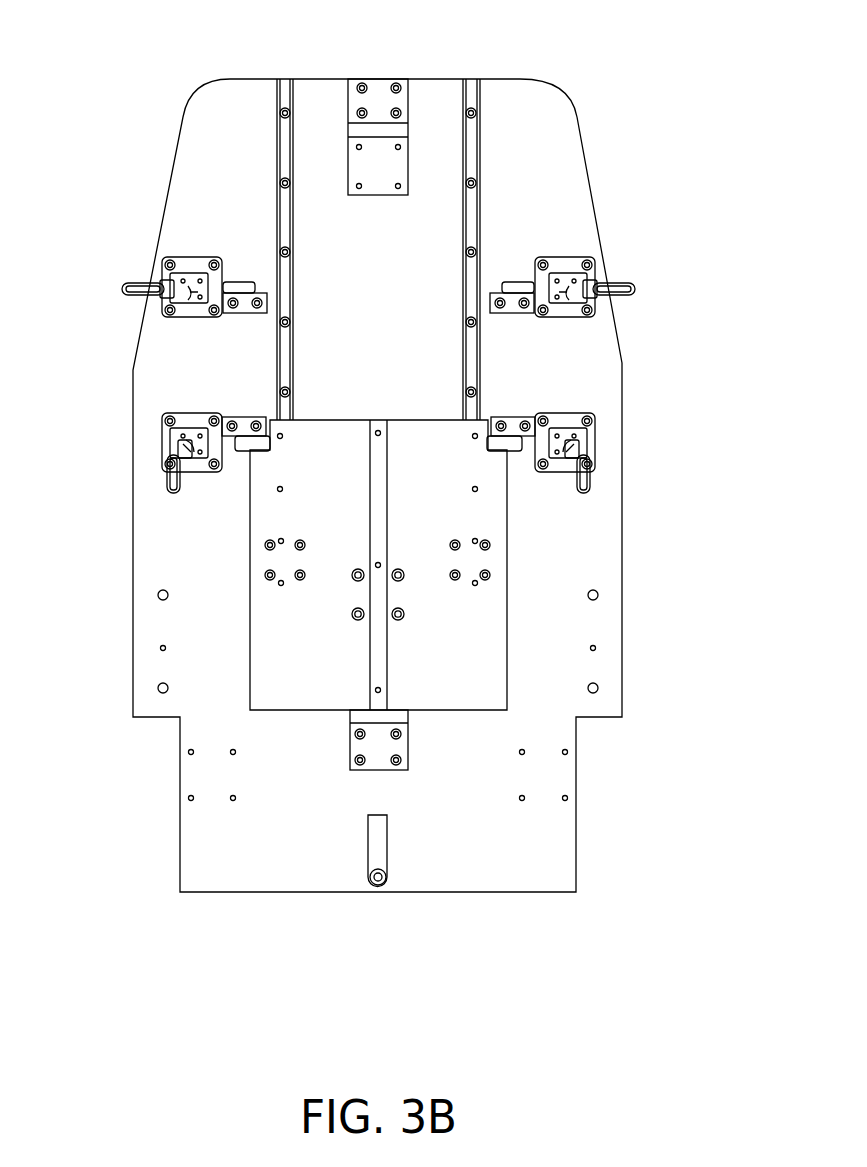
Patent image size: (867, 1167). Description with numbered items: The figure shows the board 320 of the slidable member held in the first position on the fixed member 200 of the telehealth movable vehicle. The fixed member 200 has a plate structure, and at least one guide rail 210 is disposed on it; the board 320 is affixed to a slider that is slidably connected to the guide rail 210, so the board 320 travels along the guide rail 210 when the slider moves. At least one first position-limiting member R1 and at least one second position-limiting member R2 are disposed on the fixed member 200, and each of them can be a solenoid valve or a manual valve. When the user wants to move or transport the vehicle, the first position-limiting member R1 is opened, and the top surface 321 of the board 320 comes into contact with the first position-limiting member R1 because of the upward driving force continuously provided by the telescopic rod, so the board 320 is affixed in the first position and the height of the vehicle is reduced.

The fixed member 200 is at (152, 565).
The guide rail 210 is at (285, 90).
The board 320 is at (275, 618).
The top surface 321 is at (252, 452).
The first position-limiting member R1 is at (160, 440).
The second position-limiting member R2 is at (165, 268).